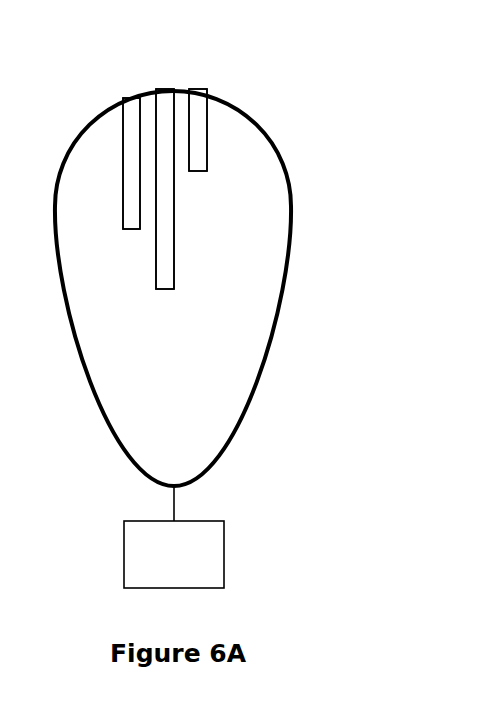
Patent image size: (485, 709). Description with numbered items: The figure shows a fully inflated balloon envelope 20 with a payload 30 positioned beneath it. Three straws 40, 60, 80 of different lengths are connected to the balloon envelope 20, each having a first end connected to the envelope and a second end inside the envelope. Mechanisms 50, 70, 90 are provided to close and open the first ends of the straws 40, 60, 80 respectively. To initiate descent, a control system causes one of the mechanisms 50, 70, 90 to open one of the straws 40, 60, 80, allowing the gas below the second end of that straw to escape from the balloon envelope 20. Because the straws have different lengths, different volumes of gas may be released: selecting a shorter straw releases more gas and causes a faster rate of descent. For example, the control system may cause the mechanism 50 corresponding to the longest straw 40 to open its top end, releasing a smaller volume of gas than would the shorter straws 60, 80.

The balloon envelope 20 is at (68, 345).
The payload 30 is at (120, 552).
The longest straw 40 is at (173, 277).
The mechanism 50 is at (157, 84).
The straw 60 is at (120, 203).
The mechanism 70 is at (130, 88).
The straw 80 is at (207, 167).
The mechanism 90 is at (197, 85).